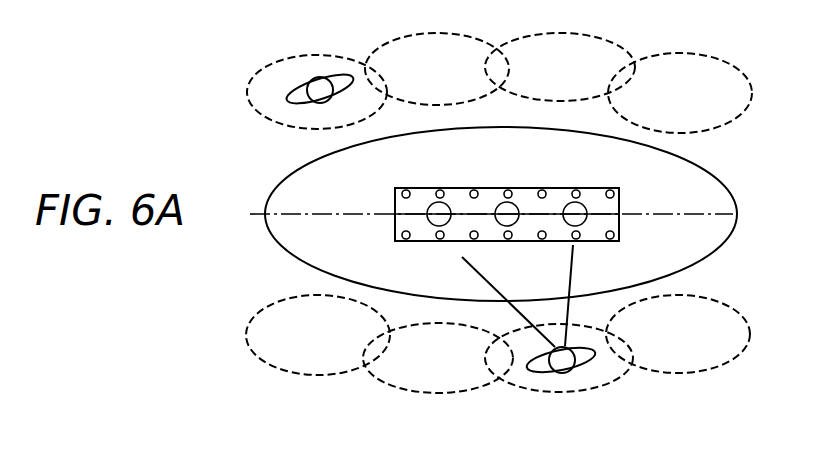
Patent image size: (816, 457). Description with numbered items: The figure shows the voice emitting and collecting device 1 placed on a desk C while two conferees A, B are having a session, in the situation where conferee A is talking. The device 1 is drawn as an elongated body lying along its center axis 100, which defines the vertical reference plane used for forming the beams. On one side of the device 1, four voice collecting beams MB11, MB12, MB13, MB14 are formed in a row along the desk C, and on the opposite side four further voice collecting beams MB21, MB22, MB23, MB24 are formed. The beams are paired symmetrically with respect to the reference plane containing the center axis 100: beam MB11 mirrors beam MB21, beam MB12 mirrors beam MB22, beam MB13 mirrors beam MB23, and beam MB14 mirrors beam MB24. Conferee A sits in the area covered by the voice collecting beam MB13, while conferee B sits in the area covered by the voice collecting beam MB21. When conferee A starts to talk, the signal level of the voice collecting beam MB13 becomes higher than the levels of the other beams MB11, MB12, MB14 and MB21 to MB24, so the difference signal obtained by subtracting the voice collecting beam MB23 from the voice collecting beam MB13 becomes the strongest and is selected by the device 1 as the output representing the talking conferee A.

The voice emitting and collecting device 1 is at (620, 193).
The center axis 100 is at (716, 213).
The desk C is at (713, 242).
The conferee A is at (575, 370).
The conferee B is at (323, 73).
The voice collecting beam MB11 is at (318, 335).
The voice collecting beam MB12 is at (438, 358).
The voice collecting beam MB13 is at (559, 375).
The voice collecting beam MB14 is at (678, 334).
The voice collecting beam MB21 is at (309, 109).
The voice collecting beam MB22 is at (437, 69).
The voice collecting beam MB23 is at (560, 67).
The voice collecting beam MB24 is at (680, 93).